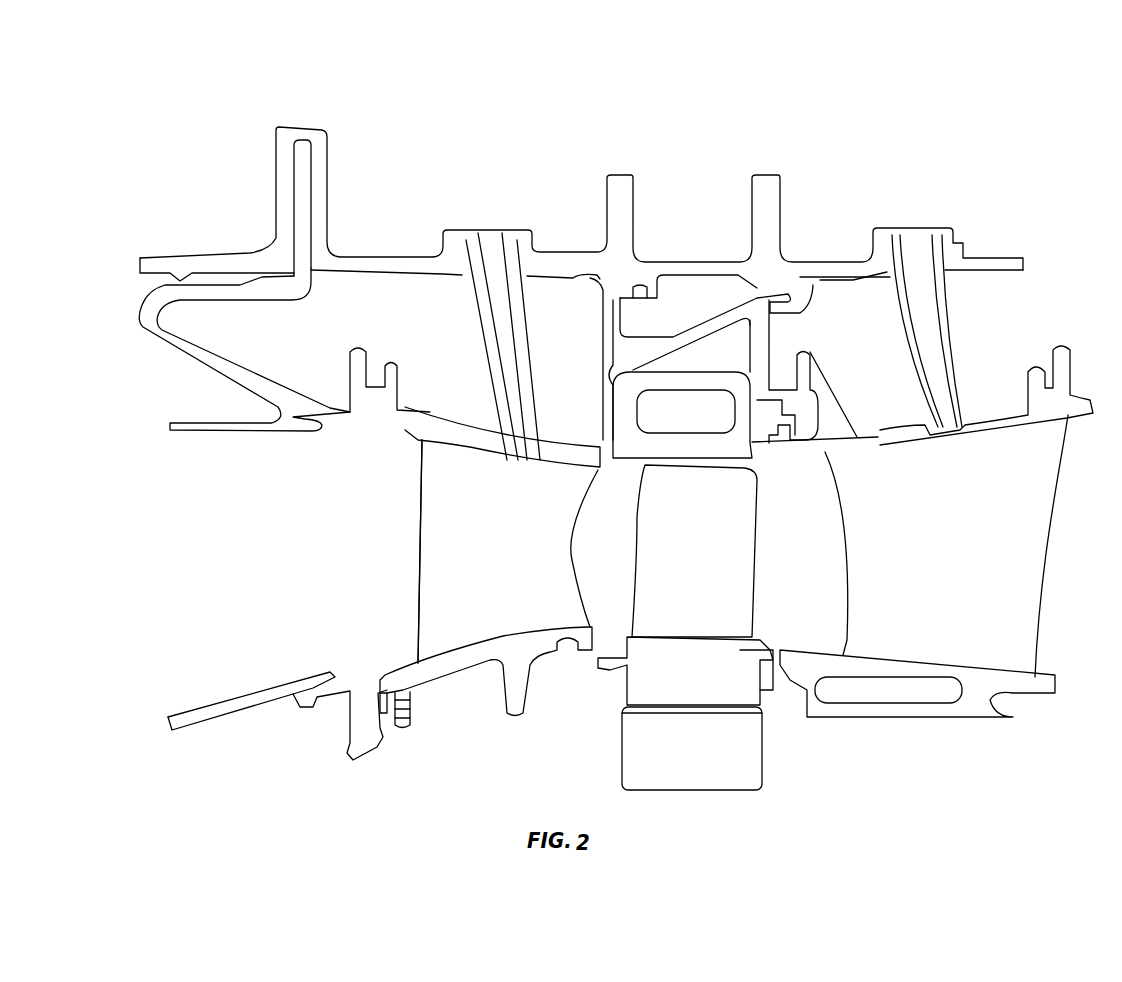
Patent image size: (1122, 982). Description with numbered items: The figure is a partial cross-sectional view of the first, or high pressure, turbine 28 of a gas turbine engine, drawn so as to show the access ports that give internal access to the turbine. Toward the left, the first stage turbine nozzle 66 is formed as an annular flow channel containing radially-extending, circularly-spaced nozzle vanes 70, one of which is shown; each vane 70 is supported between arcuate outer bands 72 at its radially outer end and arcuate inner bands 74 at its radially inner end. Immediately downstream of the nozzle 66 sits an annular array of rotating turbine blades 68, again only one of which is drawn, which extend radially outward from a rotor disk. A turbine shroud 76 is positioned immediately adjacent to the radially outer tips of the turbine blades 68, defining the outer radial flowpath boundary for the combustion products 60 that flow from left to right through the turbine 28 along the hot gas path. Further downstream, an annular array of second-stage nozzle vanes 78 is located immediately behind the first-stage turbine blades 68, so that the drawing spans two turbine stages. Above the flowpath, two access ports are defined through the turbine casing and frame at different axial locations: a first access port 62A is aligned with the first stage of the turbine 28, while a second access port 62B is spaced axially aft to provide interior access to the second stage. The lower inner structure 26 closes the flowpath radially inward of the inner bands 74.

The combustor section / inner structure 26 is at (200, 712).
The first turbine 28 is at (553, 98).
The combustion products 60 is at (236, 480).
The first access port 62A is at (485, 215).
The second access port 62B is at (910, 212).
The first stage turbine nozzle 66 is at (405, 568).
The turbine blades 68 is at (685, 627).
The nozzle vanes 70 is at (508, 551).
The arcuate outer bands 72 is at (446, 425).
The arcuate inner bands 74 is at (445, 668).
The turbine shroud 76 is at (718, 382).
The second stage nozzle vanes 78 is at (924, 566).